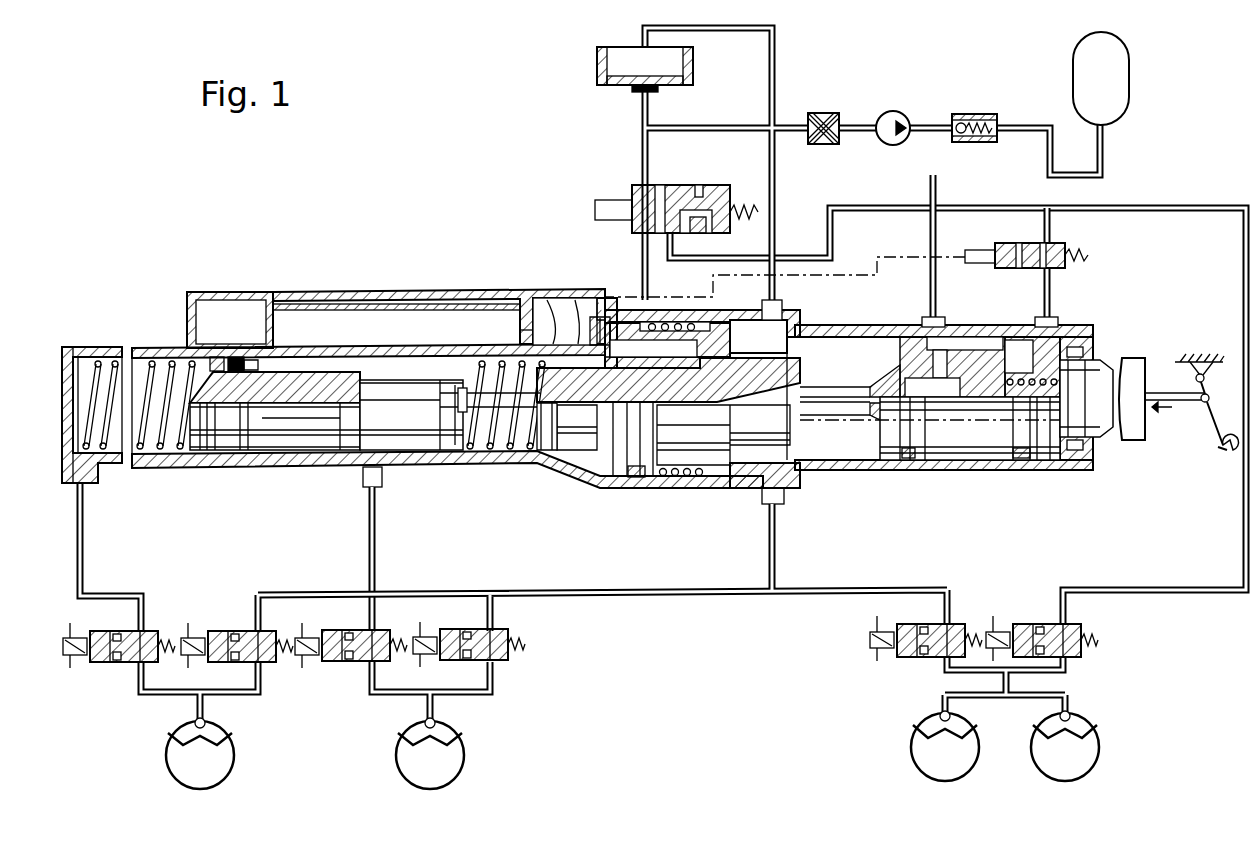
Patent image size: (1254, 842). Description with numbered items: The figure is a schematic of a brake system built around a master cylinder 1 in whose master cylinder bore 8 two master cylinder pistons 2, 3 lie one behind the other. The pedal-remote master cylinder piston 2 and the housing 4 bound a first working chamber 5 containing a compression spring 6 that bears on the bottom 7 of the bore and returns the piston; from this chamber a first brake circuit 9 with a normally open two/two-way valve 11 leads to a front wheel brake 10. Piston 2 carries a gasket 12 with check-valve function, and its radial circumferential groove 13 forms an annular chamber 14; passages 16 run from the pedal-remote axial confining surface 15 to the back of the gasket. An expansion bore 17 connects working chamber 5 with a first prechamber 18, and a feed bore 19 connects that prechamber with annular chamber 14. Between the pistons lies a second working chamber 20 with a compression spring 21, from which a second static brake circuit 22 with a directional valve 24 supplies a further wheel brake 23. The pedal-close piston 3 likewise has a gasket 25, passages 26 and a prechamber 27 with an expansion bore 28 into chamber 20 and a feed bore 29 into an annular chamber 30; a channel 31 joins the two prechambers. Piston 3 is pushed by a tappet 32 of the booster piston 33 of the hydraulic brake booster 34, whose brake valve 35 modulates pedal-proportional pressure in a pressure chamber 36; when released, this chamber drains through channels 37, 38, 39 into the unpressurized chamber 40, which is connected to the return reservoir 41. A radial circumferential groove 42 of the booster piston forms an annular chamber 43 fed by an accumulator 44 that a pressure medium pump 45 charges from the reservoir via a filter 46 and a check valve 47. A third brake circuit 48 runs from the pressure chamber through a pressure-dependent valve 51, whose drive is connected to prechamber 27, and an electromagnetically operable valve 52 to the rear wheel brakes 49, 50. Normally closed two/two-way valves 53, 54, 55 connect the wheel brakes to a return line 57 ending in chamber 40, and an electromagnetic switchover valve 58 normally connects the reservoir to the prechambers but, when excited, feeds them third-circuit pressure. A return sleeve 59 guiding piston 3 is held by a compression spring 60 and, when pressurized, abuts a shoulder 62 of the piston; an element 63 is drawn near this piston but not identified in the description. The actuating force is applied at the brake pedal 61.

The master cylinder 1 is at (308, 258).
The master cylinder piston 2 is at (245, 450).
The master cylinder piston 3 is at (556, 462).
The housing 4 is at (92, 349).
The first working chamber 5 is at (150, 358).
The compression spring 6 is at (110, 358).
The bottom 7 is at (72, 352).
The master cylinder bore 8 is at (160, 450).
The first brake circuit 9 is at (84, 558).
The wheel brake 10 is at (180, 760).
The 2/2-way valve 11 is at (122, 665).
The gasket 12 is at (218, 358).
The radial circumferential groove 13 is at (305, 440).
The annular chamber 14 is at (322, 452).
The pedal-remote axial confining surface 15 is at (262, 442).
The passages 16 is at (238, 360).
The expansion bore 17 is at (205, 348).
The first prechamber 18 is at (205, 312).
The feed bore 19 is at (252, 362).
The second working chamber 20 is at (478, 445).
The compression spring 21 is at (428, 450).
The second static brake circuit 22 is at (376, 560).
The wheel brake 23 is at (410, 760).
The directional valve 24 is at (353, 665).
The gasket 25 is at (547, 305).
The passages 26 is at (580, 340).
The prechamber 27 is at (566, 305).
The expansion bore 28 is at (525, 330).
The feed bore 29 is at (598, 320).
The annular chamber 30 is at (598, 475).
The channel 31 is at (378, 298).
The tappet 32 is at (830, 420).
The booster piston 33 is at (885, 415).
The hydraulic brake booster 34 is at (970, 478).
The brake valve 35 is at (955, 445).
The pressure chamber 36 is at (1050, 458).
The channel 37 is at (1020, 370).
The channel 38 is at (975, 380).
The channel 39 is at (888, 370).
The chamber 40 is at (848, 355).
The return reservoir 41 is at (597, 63).
The radial circumferential groove 42 is at (1020, 458).
The annular chamber 43 is at (975, 455).
The accumulator 44 is at (1115, 84).
The pressure medium pump 45 is at (892, 111).
The filter 46 is at (824, 113).
The check valve 47 is at (972, 114).
The third brake circuit 48 is at (1188, 595).
The wheel brake 49 is at (925, 752).
The wheel brake 50 is at (1085, 752).
The pressure-dependent valve 51 is at (1066, 270).
The electromagnetically operable valve 52 is at (1078, 660).
The 2/2-way valve 53 is at (263, 665).
The 2/2-way valve 54 is at (500, 665).
The 2/2-way valve 55 is at (925, 660).
The return line 57 is at (768, 563).
The electromagnetic switchover valve 58 is at (720, 185).
The return sleeve 59 is at (676, 345).
The compression spring 60 is at (676, 478).
The brake pedal 61 is at (1220, 455).
The shoulder 62 is at (806, 345).
The seal 63 is at (582, 462).